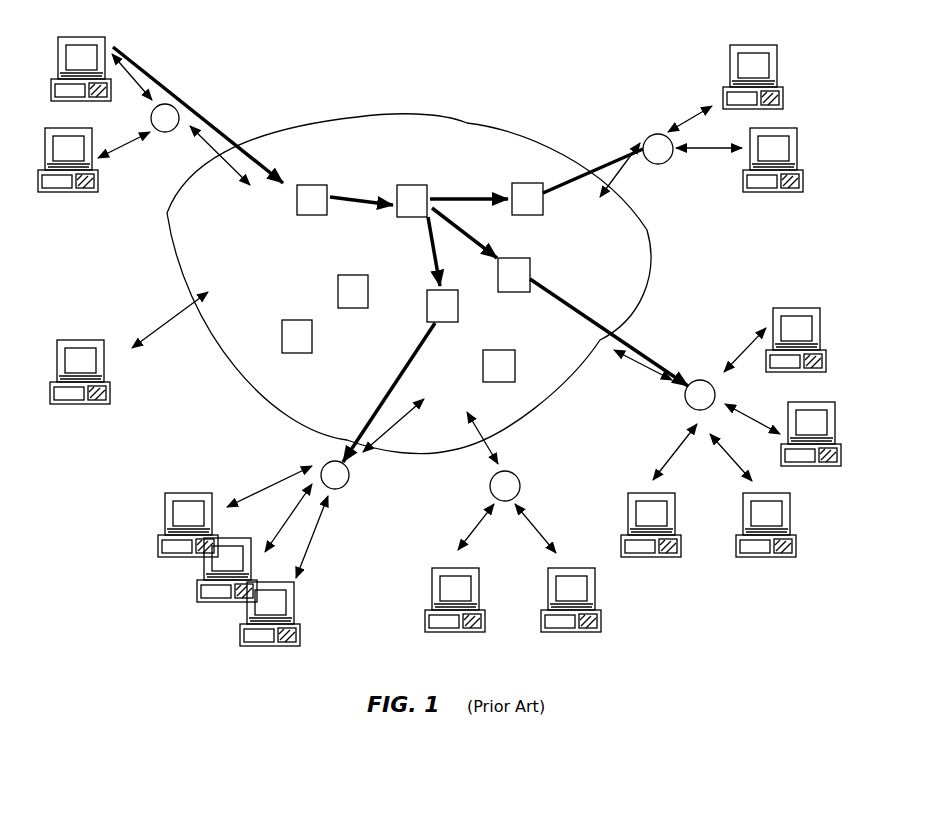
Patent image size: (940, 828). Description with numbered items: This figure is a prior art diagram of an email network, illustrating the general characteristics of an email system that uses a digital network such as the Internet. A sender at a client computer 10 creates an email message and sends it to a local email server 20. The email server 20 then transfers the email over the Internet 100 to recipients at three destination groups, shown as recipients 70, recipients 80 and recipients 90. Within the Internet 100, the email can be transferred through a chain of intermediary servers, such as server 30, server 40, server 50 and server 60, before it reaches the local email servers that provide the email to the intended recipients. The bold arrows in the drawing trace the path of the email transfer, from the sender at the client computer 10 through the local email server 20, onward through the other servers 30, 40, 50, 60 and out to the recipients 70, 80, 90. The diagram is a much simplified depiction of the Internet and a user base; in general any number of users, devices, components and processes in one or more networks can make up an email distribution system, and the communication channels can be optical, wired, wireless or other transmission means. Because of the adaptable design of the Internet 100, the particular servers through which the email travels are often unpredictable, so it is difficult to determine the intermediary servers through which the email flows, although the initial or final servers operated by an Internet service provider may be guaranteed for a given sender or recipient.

The client computer 10 is at (58, 48).
The email server 20 is at (165, 118).
The server 30 is at (312, 200).
The server 40 is at (412, 201).
The server 50 is at (527, 199).
The server 60 is at (442, 306).
The recipients 70 is at (156, 605).
The recipients 80 is at (880, 519).
The recipients 90 is at (840, 97).
The Internet 100 is at (403, 118).